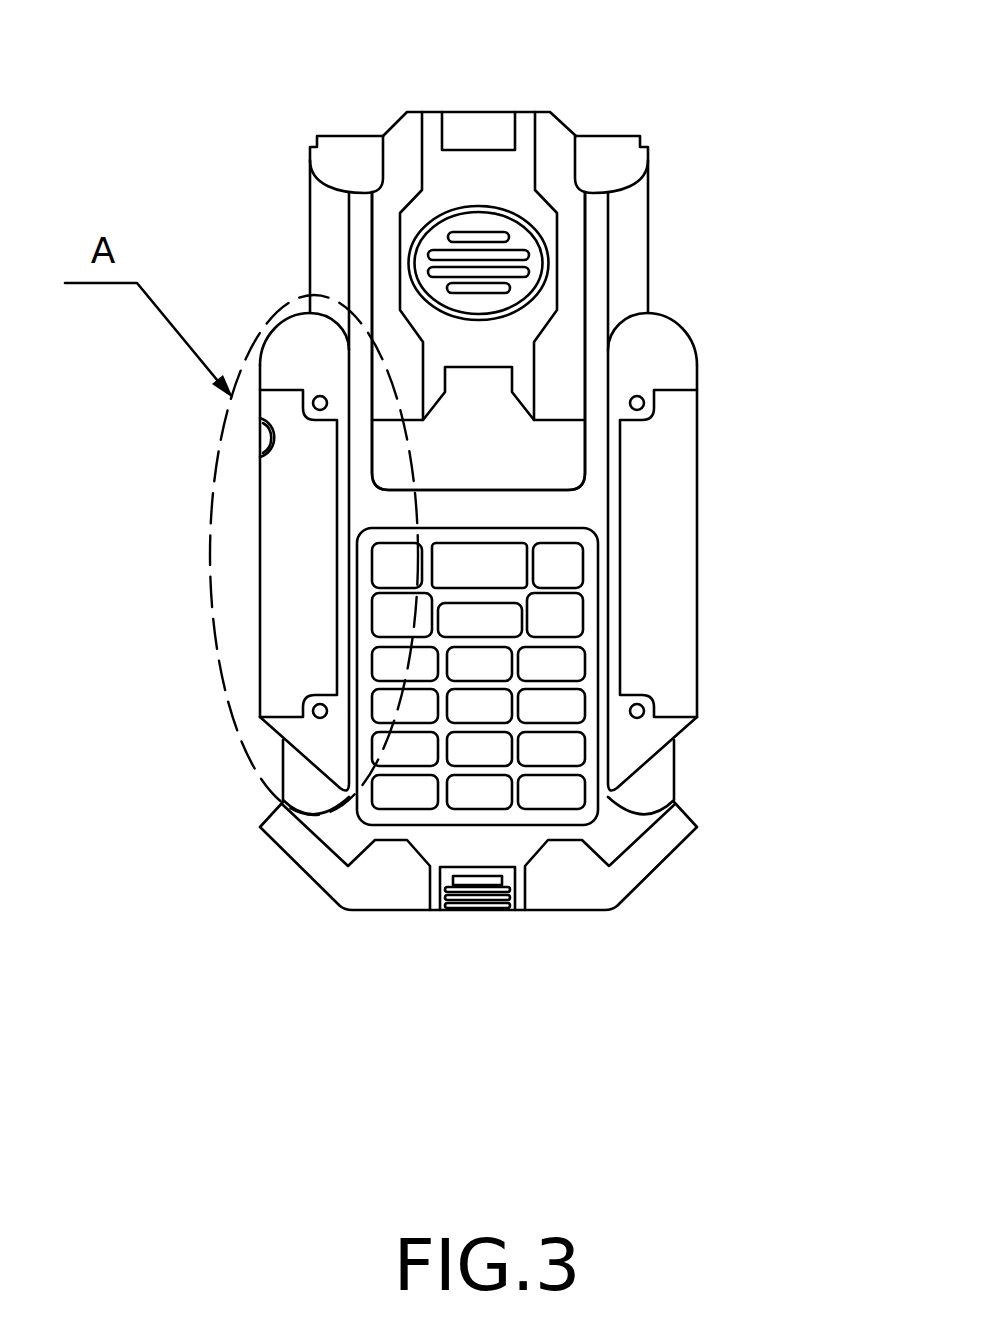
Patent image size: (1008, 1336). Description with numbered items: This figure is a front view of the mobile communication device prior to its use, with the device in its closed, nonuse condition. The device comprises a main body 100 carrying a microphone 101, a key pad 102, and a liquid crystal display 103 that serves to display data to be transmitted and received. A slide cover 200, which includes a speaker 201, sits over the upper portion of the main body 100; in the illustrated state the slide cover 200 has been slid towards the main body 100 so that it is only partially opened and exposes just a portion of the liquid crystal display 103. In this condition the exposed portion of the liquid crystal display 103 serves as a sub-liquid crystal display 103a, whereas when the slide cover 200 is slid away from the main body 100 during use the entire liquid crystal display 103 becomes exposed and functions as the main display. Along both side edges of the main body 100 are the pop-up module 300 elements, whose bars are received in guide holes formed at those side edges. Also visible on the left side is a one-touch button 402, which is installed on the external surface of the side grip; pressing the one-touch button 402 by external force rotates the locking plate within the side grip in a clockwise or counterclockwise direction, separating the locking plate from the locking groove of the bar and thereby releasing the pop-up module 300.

The main body 100 is at (662, 232).
The microphone 101 is at (483, 880).
The key pad 102 is at (575, 663).
The liquid crystal display 103 is at (600, 437).
The sub-liquid crystal display 103a is at (571, 476).
The slide cover 200 is at (531, 102).
The speaker 201 is at (450, 236).
The pop-up module 300 is at (622, 126).
The one-touch button 402 is at (257, 440).